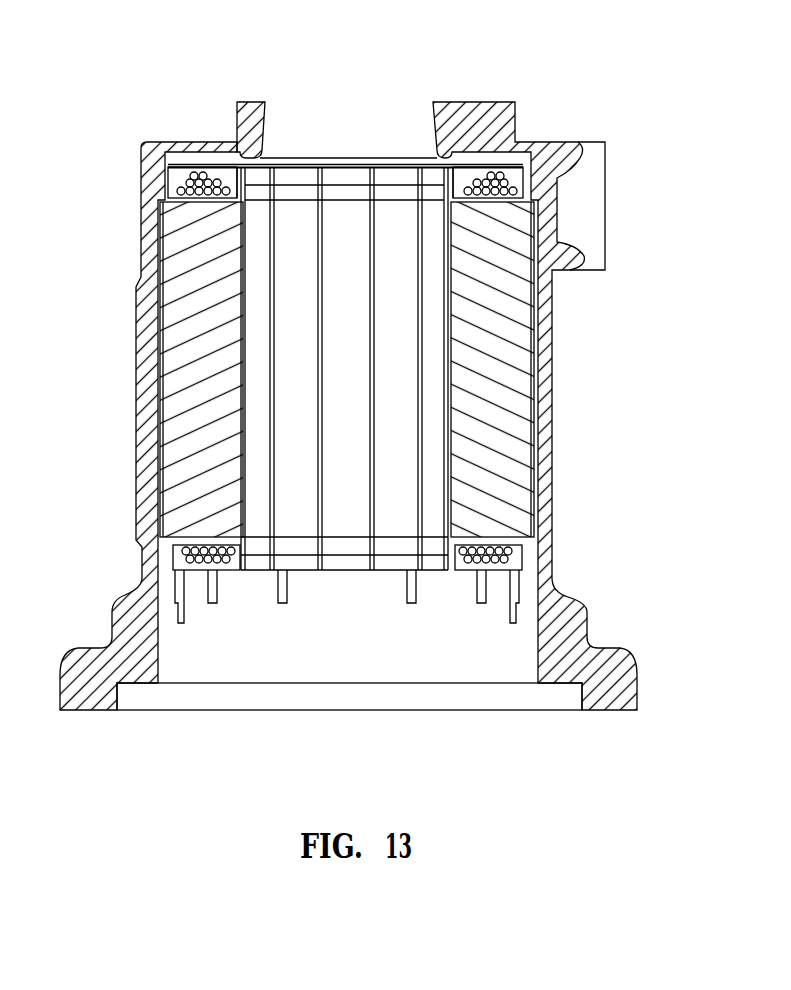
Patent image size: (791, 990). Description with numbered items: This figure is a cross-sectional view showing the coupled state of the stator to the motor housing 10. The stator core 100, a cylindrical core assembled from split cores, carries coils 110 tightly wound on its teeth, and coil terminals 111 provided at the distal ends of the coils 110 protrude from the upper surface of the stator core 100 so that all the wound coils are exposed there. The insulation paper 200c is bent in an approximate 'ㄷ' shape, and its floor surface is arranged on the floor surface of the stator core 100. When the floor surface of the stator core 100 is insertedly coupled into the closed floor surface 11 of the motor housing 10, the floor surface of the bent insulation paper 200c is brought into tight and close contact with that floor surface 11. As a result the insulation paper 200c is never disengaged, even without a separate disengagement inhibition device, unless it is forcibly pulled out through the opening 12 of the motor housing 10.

The motor housing 10 is at (588, 203).
The floor surface of the motor housing 11 is at (452, 102).
The opening of the motor housing 12 is at (533, 695).
The stator core 100 is at (435, 345).
The coil 110 is at (506, 172).
The coil terminal 111 is at (517, 610).
The insulation paper 200c is at (470, 170).